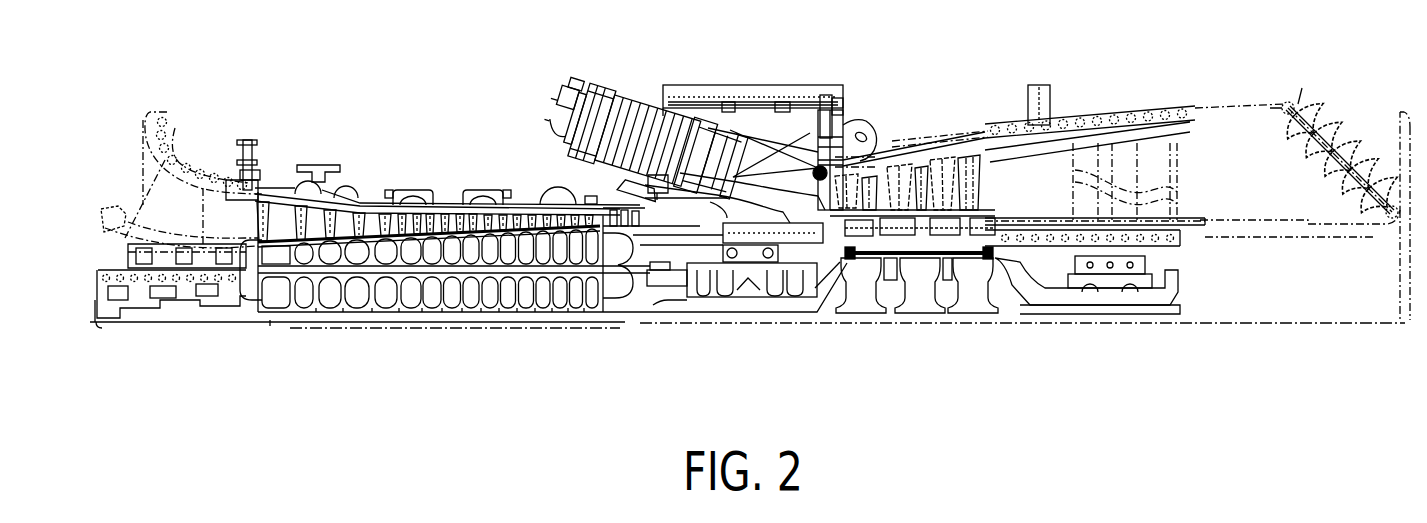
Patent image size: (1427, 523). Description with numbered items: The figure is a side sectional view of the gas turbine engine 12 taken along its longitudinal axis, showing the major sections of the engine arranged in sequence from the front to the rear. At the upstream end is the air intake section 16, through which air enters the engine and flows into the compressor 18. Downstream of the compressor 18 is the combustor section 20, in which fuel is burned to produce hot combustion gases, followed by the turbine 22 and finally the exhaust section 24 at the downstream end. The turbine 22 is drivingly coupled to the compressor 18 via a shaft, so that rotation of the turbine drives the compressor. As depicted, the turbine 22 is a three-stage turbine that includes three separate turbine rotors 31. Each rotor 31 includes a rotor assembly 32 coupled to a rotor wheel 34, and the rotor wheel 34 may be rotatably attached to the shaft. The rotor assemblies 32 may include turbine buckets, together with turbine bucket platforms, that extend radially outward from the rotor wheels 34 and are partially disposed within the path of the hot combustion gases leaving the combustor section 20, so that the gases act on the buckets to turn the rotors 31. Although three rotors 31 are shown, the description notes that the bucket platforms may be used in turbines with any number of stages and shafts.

The gas turbine engine 12 is at (750, 214).
The air intake section 16 is at (162, 216).
The compressor 18 is at (566, 186).
The combustor section 20 is at (798, 116).
The turbine 22 is at (923, 214).
The exhaust section 24 is at (1399, 76).
The turbine rotor 31 is at (891, 367).
The rotor assembly 32 is at (916, 186).
The rotor wheel 34 is at (979, 307).